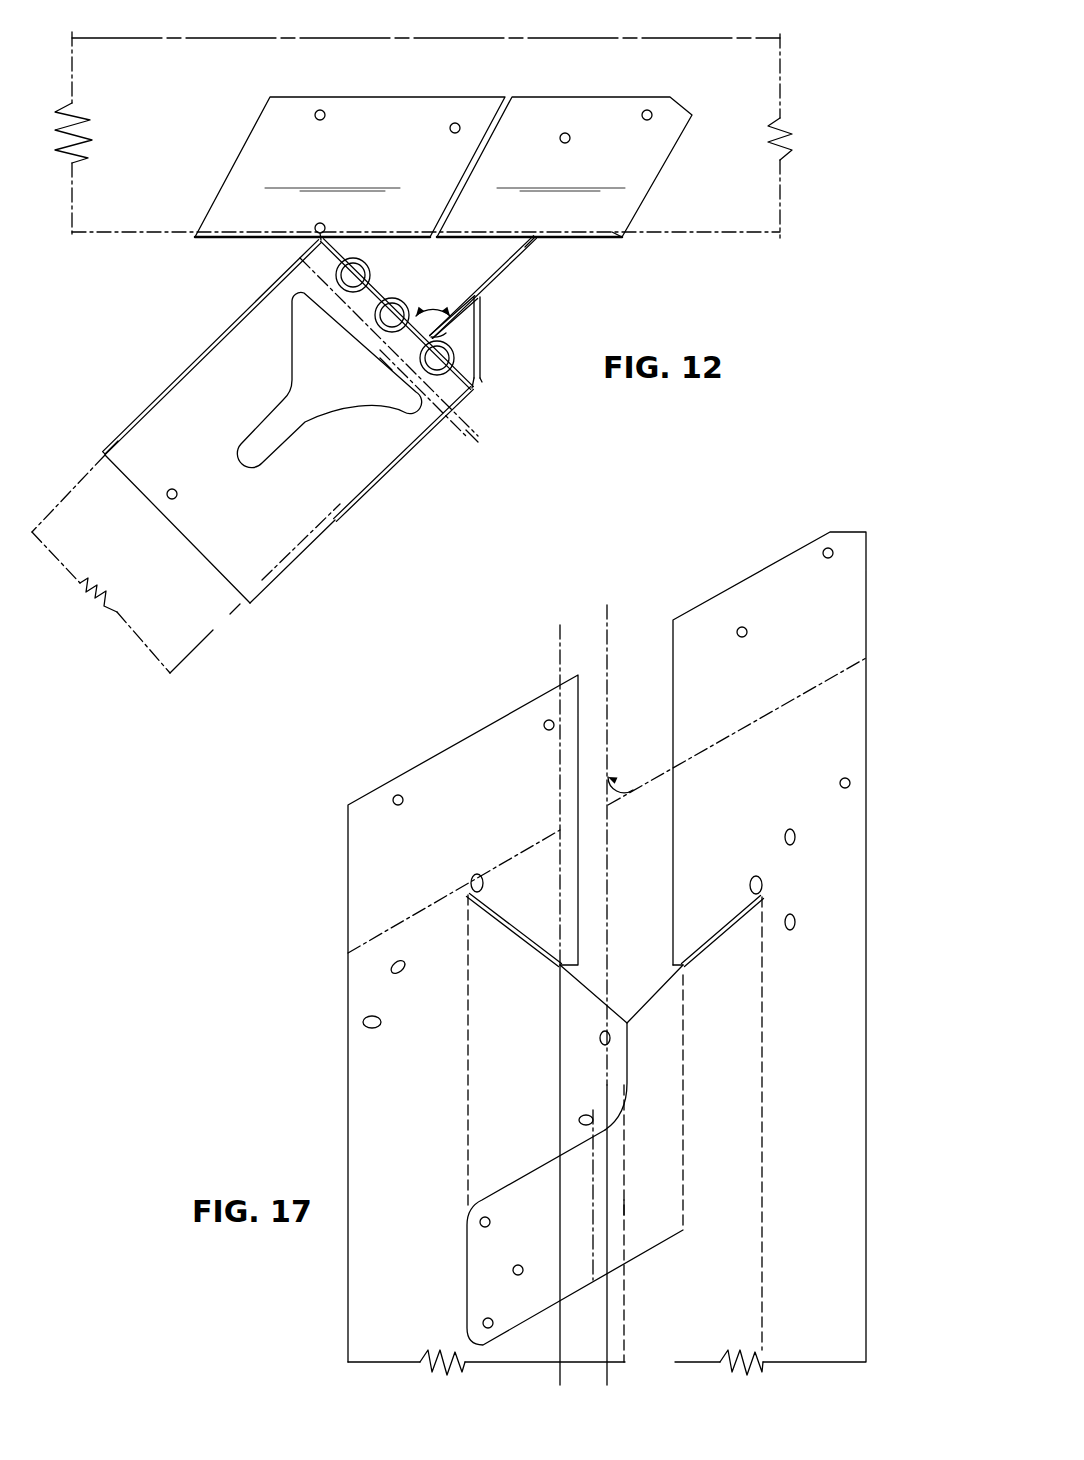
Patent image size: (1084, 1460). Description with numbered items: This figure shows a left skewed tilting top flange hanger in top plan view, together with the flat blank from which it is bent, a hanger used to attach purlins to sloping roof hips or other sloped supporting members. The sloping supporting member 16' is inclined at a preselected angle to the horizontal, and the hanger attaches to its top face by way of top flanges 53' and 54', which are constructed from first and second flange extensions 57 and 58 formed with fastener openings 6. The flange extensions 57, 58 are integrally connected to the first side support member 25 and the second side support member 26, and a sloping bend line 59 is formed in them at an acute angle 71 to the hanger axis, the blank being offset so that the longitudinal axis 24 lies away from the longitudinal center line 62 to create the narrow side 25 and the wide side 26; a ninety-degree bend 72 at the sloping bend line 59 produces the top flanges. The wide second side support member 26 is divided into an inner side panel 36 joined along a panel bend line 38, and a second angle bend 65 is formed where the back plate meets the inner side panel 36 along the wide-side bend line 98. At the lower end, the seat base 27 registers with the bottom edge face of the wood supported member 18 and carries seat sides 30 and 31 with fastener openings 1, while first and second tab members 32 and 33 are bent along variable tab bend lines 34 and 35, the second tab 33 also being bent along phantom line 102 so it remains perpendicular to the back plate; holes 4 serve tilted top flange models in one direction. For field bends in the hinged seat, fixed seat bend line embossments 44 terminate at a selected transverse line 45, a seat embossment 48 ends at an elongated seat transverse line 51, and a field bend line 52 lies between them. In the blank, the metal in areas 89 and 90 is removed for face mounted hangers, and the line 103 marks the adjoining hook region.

In FIG. 12, the fastener openings 1 is at (178, 494).
In FIG. 17, the fastener openings 1 is at (599, 1038).
In FIG. 17, the holes 4 is at (478, 874).
In FIG. 12, the fastener openings 6 is at (320, 120).
In FIG. 17, the fastener openings 6 is at (549, 730).
In FIG. 12, the supporting member 16' is at (423, 119).
In FIG. 12, the wood supported member 18 is at (203, 648).
In FIG. 17, the longitudinal axis 24 is at (560, 658).
In FIG. 12, the first side support member 25 is at (260, 372).
In FIG. 17, the first side support member 25 is at (481, 1120).
In FIG. 12, the second side support member 26 is at (514, 316).
In FIG. 17, the second side support member 26 is at (763, 1129).
In FIG. 12, the seat base 27 is at (252, 550).
In FIG. 12, the seat side 30 is at (117, 437).
In FIG. 12, the second seat side 31 is at (292, 572).
In FIG. 12, the first tab member 32 is at (268, 288).
In FIG. 17, the first tab member 32 is at (628, 1065).
In FIG. 12, the second tab member 33 is at (437, 423).
In FIG. 17, the second tab member 33 is at (467, 1280).
In FIG. 17, the first tab bend line 34 is at (470, 1070).
In FIG. 12, the second tab bend line 35 is at (481, 303).
In FIG. 17, the second tab bend line 35 is at (684, 1105).
In FIG. 12, the inner side panel 36 is at (505, 277).
In FIG. 12, the panel bend line 38 is at (540, 240).
In FIG. 17, the panel bend line 38 is at (765, 1200).
In FIG. 12, the fixed seat bend line embossments 44 is at (398, 300).
In FIG. 12, the selected transverse line 45 is at (478, 423).
In FIG. 12, the seat embossment 48 is at (300, 427).
In FIG. 12, the elongated seat transverse line 51 is at (388, 346).
In FIG. 12, the field bend line 52 is at (472, 437).
In FIG. 12, the top flange 53' is at (350, 148).
In FIG. 12, the top flange 54' is at (564, 151).
In FIG. 17, the first flange extension 57 is at (458, 740).
In FIG. 17, the second flange extension 58 is at (750, 575).
In FIG. 12, the sloping bend line 59 is at (612, 240).
In FIG. 17, the sloping bend line 59 is at (560, 818).
In FIG. 17, the longitudinal center line 62 is at (607, 623).
In FIG. 12, the second angle bend 65 is at (437, 307).
In FIG. 17, the acute angle 71 is at (620, 783).
In FIG. 12, the 90° bend 72 is at (625, 237).
In FIG. 17, the area 89 is at (548, 921).
In FIG. 17, the area 90 is at (720, 921).
In FIG. 12, the wide-side bend line 98 is at (452, 335).
In FIG. 17, the wide-side bend line 98 is at (626, 1300).
In FIG. 17, the phantom line 102 is at (624, 1207).
In FIG. 12, the hook portion 103 is at (484, 381).
In FIG. 17, the hook portion 103 is at (593, 1190).